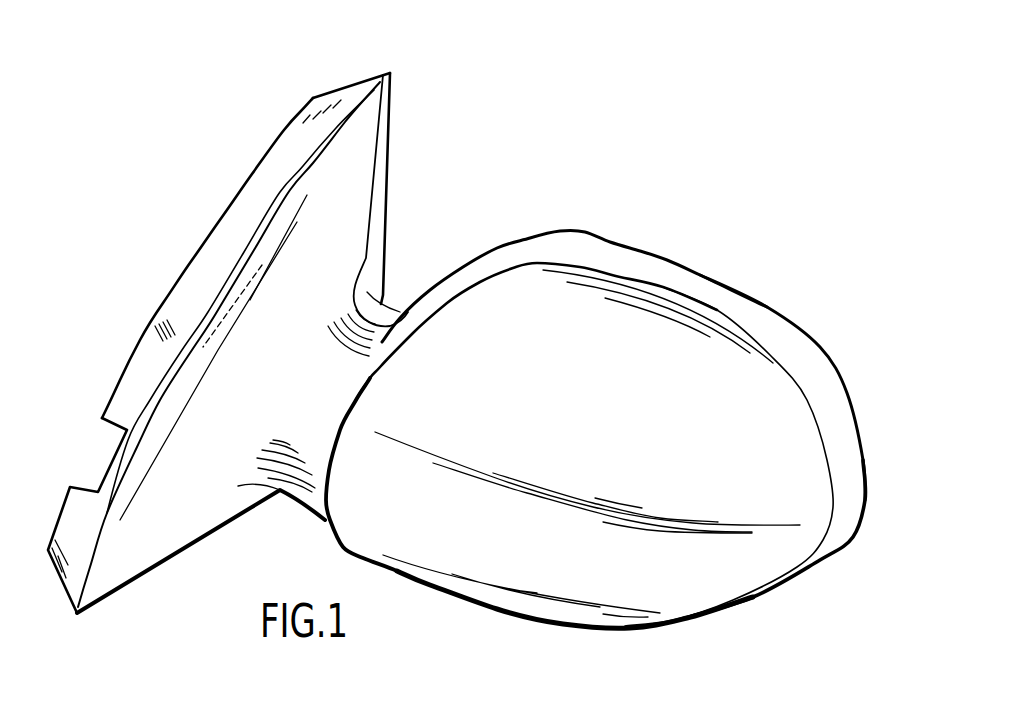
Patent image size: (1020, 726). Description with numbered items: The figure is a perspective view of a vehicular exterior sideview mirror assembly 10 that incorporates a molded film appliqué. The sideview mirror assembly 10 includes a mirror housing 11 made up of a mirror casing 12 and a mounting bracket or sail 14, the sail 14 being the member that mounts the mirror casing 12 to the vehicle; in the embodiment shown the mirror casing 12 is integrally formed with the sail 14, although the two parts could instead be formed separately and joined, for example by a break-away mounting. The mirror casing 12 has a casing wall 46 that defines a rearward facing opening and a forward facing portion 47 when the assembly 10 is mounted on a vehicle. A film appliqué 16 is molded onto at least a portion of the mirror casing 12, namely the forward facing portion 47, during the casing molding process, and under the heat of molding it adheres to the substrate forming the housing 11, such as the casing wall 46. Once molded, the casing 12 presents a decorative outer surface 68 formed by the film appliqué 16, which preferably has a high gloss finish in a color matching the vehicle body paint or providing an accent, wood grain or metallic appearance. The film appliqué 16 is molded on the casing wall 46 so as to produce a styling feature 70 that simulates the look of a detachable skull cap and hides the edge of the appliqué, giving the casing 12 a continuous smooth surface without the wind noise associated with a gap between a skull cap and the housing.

The vehicular exterior sideview mirror assembly 10 is at (621, 405).
The mirror housing 11 is at (449, 230).
The mirror casing 12 is at (700, 240).
The mounting bracket or sail 14 is at (372, 192).
The film appliqué 16 is at (532, 220).
The casing wall 46 is at (818, 347).
The forward facing portion 47 is at (850, 549).
The decorative outer surface 68 is at (568, 590).
The styling feature 70 is at (807, 403).